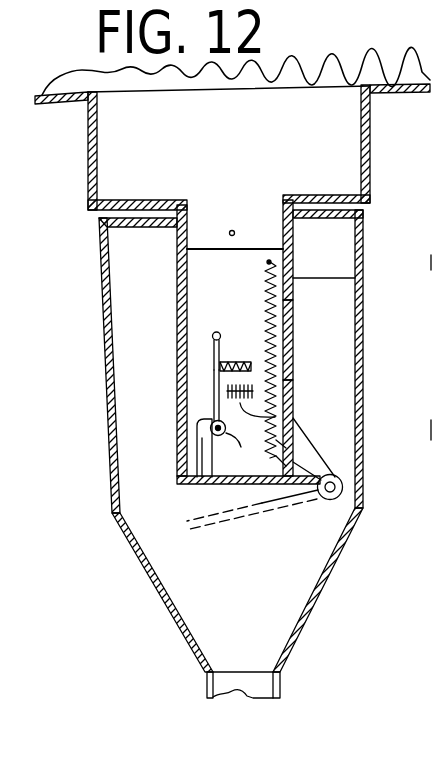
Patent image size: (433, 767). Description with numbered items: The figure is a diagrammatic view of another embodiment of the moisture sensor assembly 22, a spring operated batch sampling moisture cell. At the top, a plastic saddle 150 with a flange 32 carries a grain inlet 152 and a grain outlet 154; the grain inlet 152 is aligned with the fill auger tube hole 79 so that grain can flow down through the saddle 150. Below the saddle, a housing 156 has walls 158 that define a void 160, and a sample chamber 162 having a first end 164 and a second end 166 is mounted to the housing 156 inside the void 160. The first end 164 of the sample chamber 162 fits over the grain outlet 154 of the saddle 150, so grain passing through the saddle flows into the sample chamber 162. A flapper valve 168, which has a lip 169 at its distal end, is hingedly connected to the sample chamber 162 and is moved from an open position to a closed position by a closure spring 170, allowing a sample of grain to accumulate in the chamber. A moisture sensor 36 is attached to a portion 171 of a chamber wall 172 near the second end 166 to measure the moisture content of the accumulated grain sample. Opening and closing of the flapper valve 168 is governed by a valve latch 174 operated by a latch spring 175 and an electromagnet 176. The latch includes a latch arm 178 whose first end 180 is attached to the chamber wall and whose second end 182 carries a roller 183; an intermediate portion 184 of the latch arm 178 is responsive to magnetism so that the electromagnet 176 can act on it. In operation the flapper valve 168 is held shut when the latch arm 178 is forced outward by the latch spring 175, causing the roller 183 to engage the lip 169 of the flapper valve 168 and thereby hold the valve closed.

The moisture sensor assembly 22 is at (88, 282).
The mounting flange 32 is at (77, 106).
The moisture sensor 36 is at (293, 440).
The fill auger tube hole 79 is at (110, 93).
The plastic saddle 150 is at (88, 157).
The grain inlet 152 is at (302, 88).
The grain outlet 154 is at (247, 223).
The housing 156 is at (98, 353).
The walls 158 is at (110, 412).
The void 160 is at (150, 503).
The sample chamber 162 is at (356, 278).
The first end 164 is at (290, 268).
The second end 166 is at (290, 388).
The flapper valve 168 is at (248, 490).
The lip 169 is at (196, 447).
The closure spring 170 is at (274, 333).
The portion of chamber wall 171 is at (364, 476).
The chamber wall 172 is at (290, 366).
The valve latch 174 is at (207, 276).
The latch spring 175 is at (241, 362).
The electromagnet 176 is at (290, 416).
The latch arm 178 is at (198, 385).
The first end 180 is at (214, 367).
The second end 182 is at (200, 403).
The roller 183 is at (232, 447).
The intermediate portion 184 is at (214, 363).